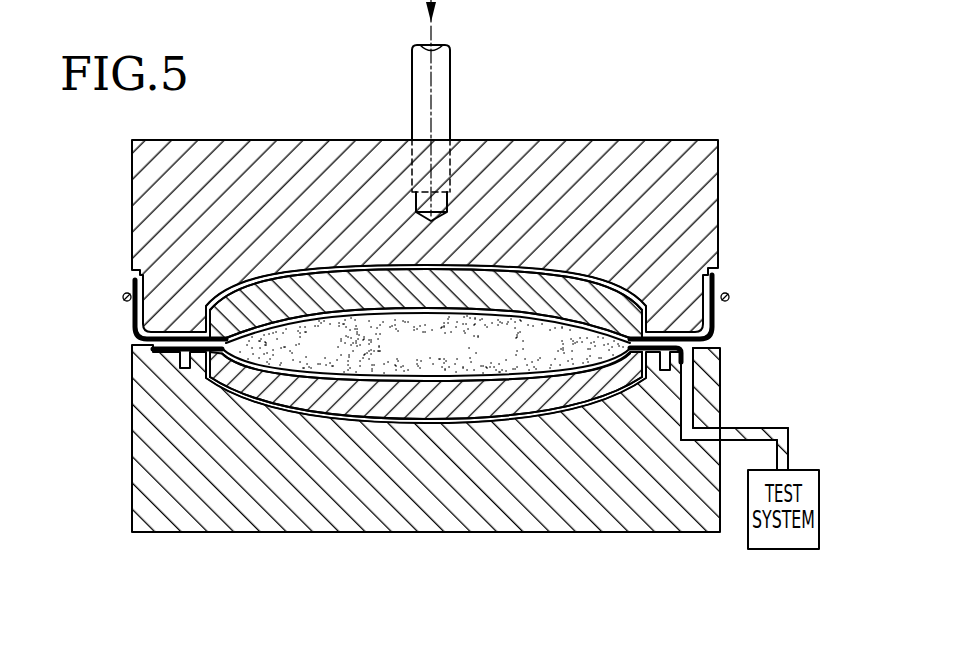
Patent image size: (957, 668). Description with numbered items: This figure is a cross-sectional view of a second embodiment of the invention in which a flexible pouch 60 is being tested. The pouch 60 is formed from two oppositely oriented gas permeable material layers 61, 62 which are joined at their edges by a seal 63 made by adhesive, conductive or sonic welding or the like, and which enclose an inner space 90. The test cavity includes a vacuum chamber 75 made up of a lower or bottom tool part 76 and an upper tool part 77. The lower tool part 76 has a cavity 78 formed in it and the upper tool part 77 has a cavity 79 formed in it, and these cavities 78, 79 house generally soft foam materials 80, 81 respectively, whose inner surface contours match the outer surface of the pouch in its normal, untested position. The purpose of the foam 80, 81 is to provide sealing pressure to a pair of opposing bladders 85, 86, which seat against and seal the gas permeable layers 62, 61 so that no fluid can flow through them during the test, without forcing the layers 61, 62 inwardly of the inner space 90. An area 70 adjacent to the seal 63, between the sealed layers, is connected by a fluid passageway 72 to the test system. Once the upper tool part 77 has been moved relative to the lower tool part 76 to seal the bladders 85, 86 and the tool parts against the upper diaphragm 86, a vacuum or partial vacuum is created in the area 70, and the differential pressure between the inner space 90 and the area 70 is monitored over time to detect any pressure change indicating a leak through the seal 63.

The flexible pouch 60 is at (297, 298).
The gas permeable material layer 61 is at (320, 372).
The gas permeable material layer 62 is at (517, 318).
The seal 63 is at (632, 334).
The area adjacent to the seal 70 is at (712, 346).
The fluid passageway 72 is at (702, 398).
The vacuum chamber 75 is at (256, 401).
The lower tool part 76 is at (362, 518).
The upper tool part 77 is at (516, 152).
The cavity 78 is at (372, 408).
The cavity 79 is at (560, 286).
The soft foam material 80 is at (532, 398).
The soft foam material 81 is at (534, 282).
The bladder 85 is at (303, 418).
The bladder 86 is at (466, 305).
The inner space 90 is at (510, 357).